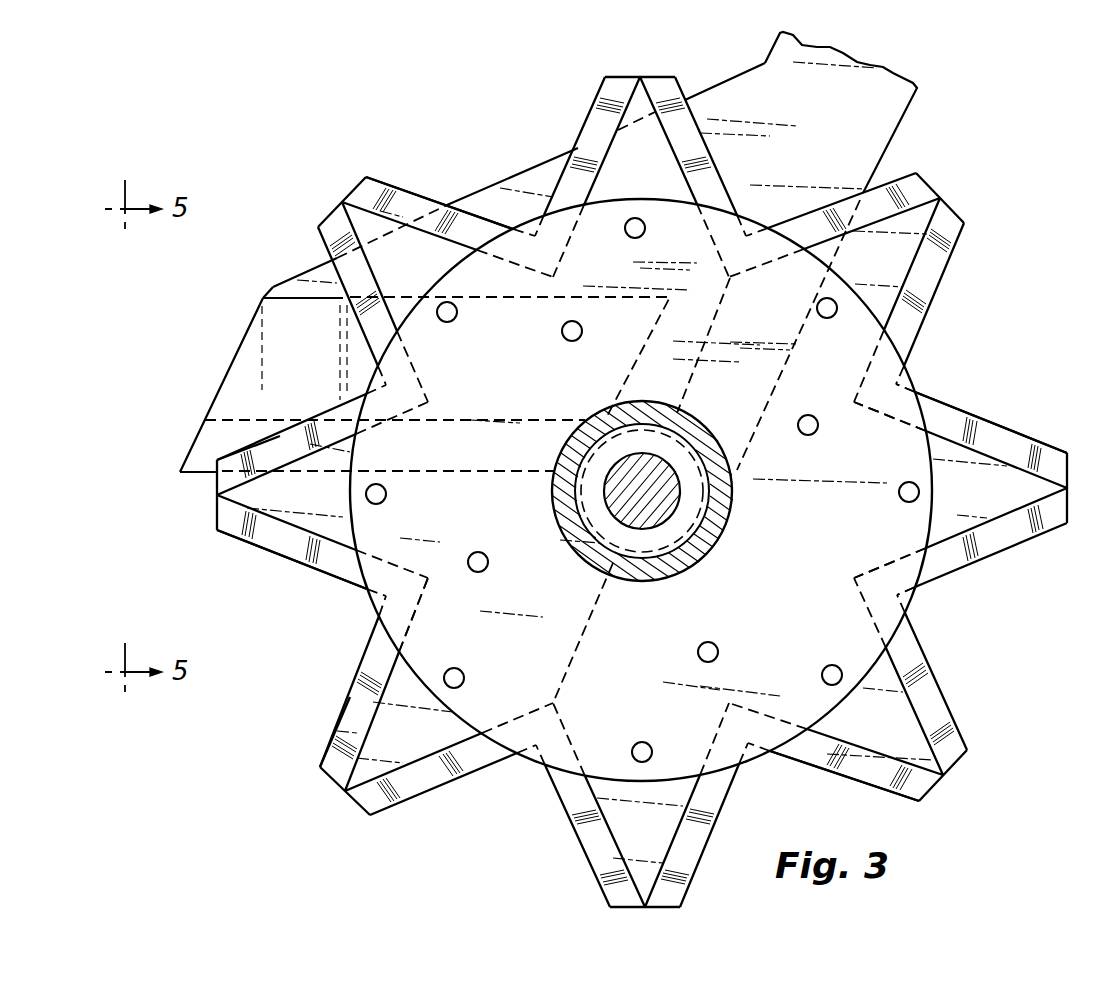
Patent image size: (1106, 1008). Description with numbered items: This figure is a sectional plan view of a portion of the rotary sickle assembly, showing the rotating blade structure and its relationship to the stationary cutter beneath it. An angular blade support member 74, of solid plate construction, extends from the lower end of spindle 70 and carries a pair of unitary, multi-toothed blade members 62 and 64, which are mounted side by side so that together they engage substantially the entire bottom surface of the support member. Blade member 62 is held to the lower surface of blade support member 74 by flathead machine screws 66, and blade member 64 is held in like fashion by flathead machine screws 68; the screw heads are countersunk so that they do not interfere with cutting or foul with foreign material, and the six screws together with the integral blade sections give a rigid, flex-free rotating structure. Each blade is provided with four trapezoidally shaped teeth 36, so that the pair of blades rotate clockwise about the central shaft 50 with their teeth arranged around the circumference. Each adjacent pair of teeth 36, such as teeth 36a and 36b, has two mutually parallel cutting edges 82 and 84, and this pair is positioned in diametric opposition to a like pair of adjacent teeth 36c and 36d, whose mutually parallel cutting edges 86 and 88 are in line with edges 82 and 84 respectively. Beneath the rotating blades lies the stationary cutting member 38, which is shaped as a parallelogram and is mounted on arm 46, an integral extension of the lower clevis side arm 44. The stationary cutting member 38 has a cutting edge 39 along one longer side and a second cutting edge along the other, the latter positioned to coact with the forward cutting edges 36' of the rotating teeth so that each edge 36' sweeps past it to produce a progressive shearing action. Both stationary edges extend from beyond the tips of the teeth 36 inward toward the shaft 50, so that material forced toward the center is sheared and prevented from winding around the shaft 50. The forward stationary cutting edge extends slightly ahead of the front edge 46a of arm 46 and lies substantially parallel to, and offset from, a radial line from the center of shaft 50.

The teeth 36 is at (525, 757).
The forward cutting edges 36' is at (283, 575).
The tooth 36a is at (326, 505).
The tooth 36b is at (434, 268).
The tooth 36c is at (1006, 502).
The tooth 36d is at (902, 733).
The stationary cutting member 38 is at (243, 376).
The cutting edge 39 is at (287, 294).
The lower clevis side arm 44 is at (620, 251).
The arm 46 is at (552, 162).
The front edge 46a is at (520, 422).
The shaft 50 is at (665, 507).
The multi-toothed blade member 62 is at (435, 627).
The multi-toothed blade member 64 is at (910, 593).
The flathead machine screws 66 is at (580, 325).
The flathead machine screws 68 is at (823, 318).
The spindle 70 is at (692, 560).
The blade support member 74 is at (892, 432).
The cutting edge 82 is at (307, 568).
The cutting edge 84 is at (392, 186).
The cutting edge 86 is at (850, 785).
The cutting edge 88 is at (1003, 427).